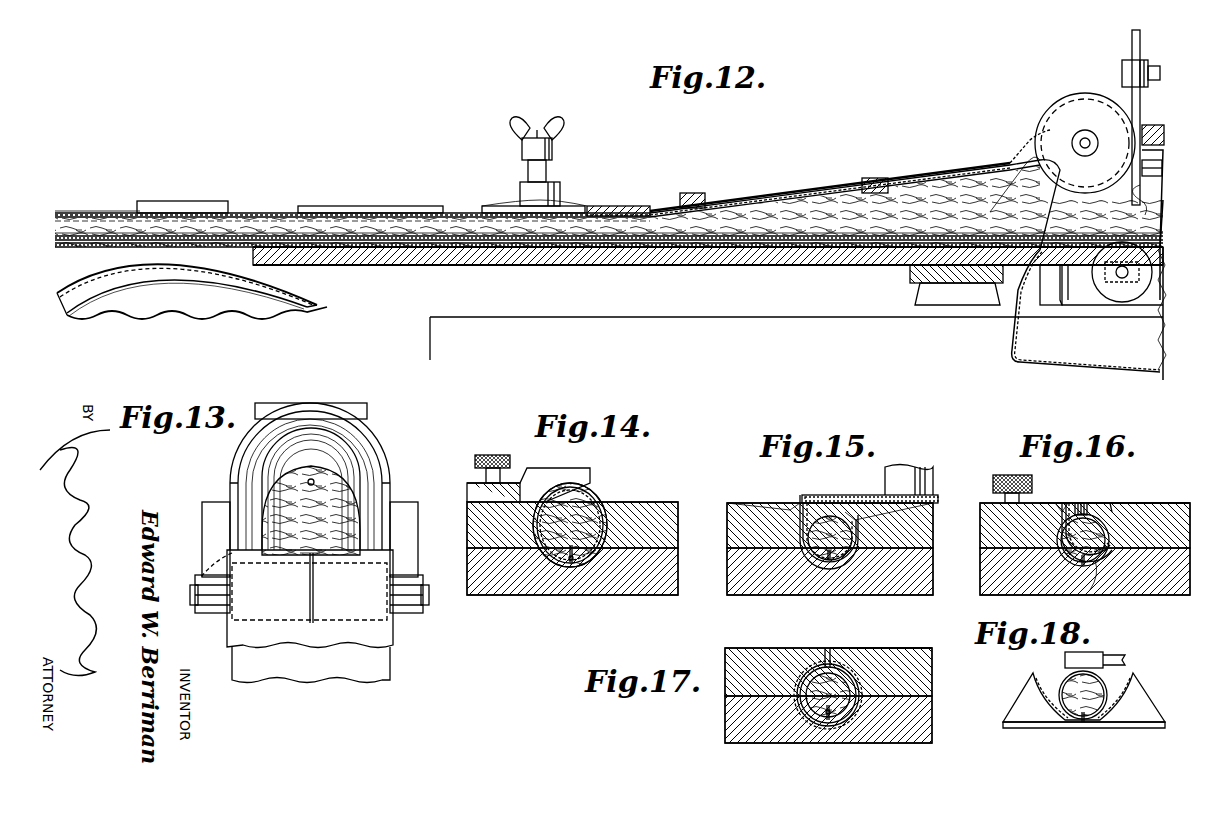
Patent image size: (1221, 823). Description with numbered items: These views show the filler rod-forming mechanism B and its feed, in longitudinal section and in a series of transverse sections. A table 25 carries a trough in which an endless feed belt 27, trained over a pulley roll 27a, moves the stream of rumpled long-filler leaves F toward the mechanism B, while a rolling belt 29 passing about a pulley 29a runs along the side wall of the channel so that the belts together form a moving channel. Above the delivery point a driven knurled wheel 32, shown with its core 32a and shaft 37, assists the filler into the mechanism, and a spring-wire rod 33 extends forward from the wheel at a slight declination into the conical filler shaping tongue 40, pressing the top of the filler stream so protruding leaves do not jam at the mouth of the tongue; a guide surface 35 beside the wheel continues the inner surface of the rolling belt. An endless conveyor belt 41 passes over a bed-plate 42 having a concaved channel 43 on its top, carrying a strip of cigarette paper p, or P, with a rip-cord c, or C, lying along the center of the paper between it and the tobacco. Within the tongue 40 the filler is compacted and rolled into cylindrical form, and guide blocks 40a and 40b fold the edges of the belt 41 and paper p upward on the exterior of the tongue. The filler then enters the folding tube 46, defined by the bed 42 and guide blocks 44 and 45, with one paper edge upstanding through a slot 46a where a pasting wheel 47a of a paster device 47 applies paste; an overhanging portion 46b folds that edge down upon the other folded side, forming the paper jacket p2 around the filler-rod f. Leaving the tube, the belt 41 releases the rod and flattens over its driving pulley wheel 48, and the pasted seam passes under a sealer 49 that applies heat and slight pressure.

In FIG. 12, the table 25 is at (1166, 255).
In FIG. 12, the endless feed belt 27 is at (1140, 305).
In FIG. 12, the pulley roll 27a is at (1112, 292).
In FIG. 12, the rolling belt 29 is at (1162, 212).
In FIG. 12, the pulley 29a is at (1162, 163).
In FIG. 12, the driven knurled wheel 32 is at (1060, 108).
In FIG. 12, the roller core 32a is at (1090, 98).
In FIG. 12, the spring-wire rod 33 is at (1140, 40).
In FIG. 13, the spring-wire rod 33 is at (314, 483).
In FIG. 12, the guide surface 35 is at (1164, 133).
In FIG. 12, the roller shaft 37 is at (1072, 140).
In FIG. 12, the conical filler shaping tongue 40 is at (790, 199).
In FIG. 13, the conical filler shaping tongue 40 is at (385, 440).
In FIG. 14, the conical filler shaping tongue 40 is at (590, 485).
In FIG. 13, the guide block 40a is at (208, 515).
In FIG. 14, the guide block 40a is at (467, 508).
In FIG. 13, the guide block 40b is at (418, 525).
In FIG. 14, the guide block 40b is at (672, 508).
In FIG. 12, the endless conveyor belt 41 is at (255, 213).
In FIG. 13, the endless conveyor belt 41 is at (200, 570).
In FIG. 14, the endless conveyor belt 41 is at (612, 515).
In FIG. 15, the endless conveyor belt 41 is at (798, 505).
In FIG. 16, the endless conveyor belt 41 is at (1060, 560).
In FIG. 17, the endless conveyor belt 41 is at (826, 725).
In FIG. 18, the endless conveyor belt 41 is at (1130, 675).
In FIG. 12, the bed-plate 42 is at (785, 265).
In FIG. 14, the bed-plate 42 is at (528, 595).
In FIG. 15, the bed-plate 42 is at (727, 575).
In FIG. 16, the bed-plate 42 is at (1160, 585).
In FIG. 17, the bed-plate 42 is at (932, 714).
In FIG. 12, the channel 43 is at (850, 265).
In FIG. 14, the channel 43 is at (604, 578).
In FIG. 15, the channel 43 is at (800, 570).
In FIG. 16, the channel 43 is at (1100, 560).
In FIG. 17, the channel 43 is at (855, 710).
In FIG. 15, the guide block 44 is at (727, 527).
In FIG. 16, the guide block 44 is at (982, 510).
In FIG. 17, the guide block 44 is at (730, 682).
In FIG. 12, the guide block 45 is at (392, 206).
In FIG. 15, the guide block 45 is at (880, 530).
In FIG. 16, the guide block 45 is at (1140, 525).
In FIG. 17, the guide block 45 is at (920, 672).
In FIG. 12, the folding tube 46 is at (630, 208).
In FIG. 15, the folding tube 46 is at (865, 525).
In FIG. 16, the folding tube 46 is at (1112, 522).
In FIG. 15, the slot 46a is at (790, 508).
In FIG. 16, the slot 46a is at (1060, 508).
In FIG. 16, the overhanging portion 46b is at (1085, 508).
In FIG. 17, the overhanging portion 46b is at (826, 655).
In FIG. 15, the paster device 47 is at (933, 468).
In FIG. 12, the pasting wheel 47a is at (488, 206).
In FIG. 15, the pasting wheel 47a is at (840, 501).
In FIG. 12, the driving pulley wheel 48 is at (270, 300).
In FIG. 12, the sealer 49 is at (200, 201).
In FIG. 18, the sealer 49 is at (1090, 656).
In FIG. 12, the filler rod-forming mechanism B is at (736, 180).
In FIG. 12, the rip-cord C is at (698, 265).
In FIG. 13, the rip-cord C is at (314, 597).
In FIG. 14, the rip-cord C is at (570, 570).
In FIG. 15, the rip-cord C is at (826, 565).
In FIG. 16, the rip-cord C is at (1080, 570).
In FIG. 17, the rip-cord C is at (832, 720).
In FIG. 18, the rip-cord C is at (1080, 724).
In FIG. 12, the rip-cord c is at (462, 213).
In FIG. 12, the long-filler leaves F is at (1150, 190).
In FIG. 13, the long-filler leaves F is at (345, 506).
In FIG. 14, the long-filler leaves F is at (545, 490).
In FIG. 12, the filler-rod f is at (118, 212).
In FIG. 15, the filler-rod f is at (845, 560).
In FIG. 16, the filler-rod f is at (1105, 525).
In FIG. 17, the filler-rod f is at (845, 680).
In FIG. 18, the filler-rod f is at (1095, 722).
In FIG. 12, the cigarette paper strip P is at (905, 195).
In FIG. 13, the cigarette paper strip P is at (232, 635).
In FIG. 14, the cigarette paper strip P is at (605, 495).
In FIG. 15, the cigarette paper strip P is at (808, 503).
In FIG. 16, the cigarette paper strip P is at (1067, 503).
In FIG. 12, the cigarette paper strip p is at (545, 265).
In FIG. 13, the cigarette paper strip p is at (295, 558).
In FIG. 16, the cigarette paper strip p is at (1100, 575).
In FIG. 12, the paper jacket p2 is at (80, 212).
In FIG. 17, the paper jacket p2 is at (805, 720).
In FIG. 18, the paper jacket p2 is at (1065, 685).